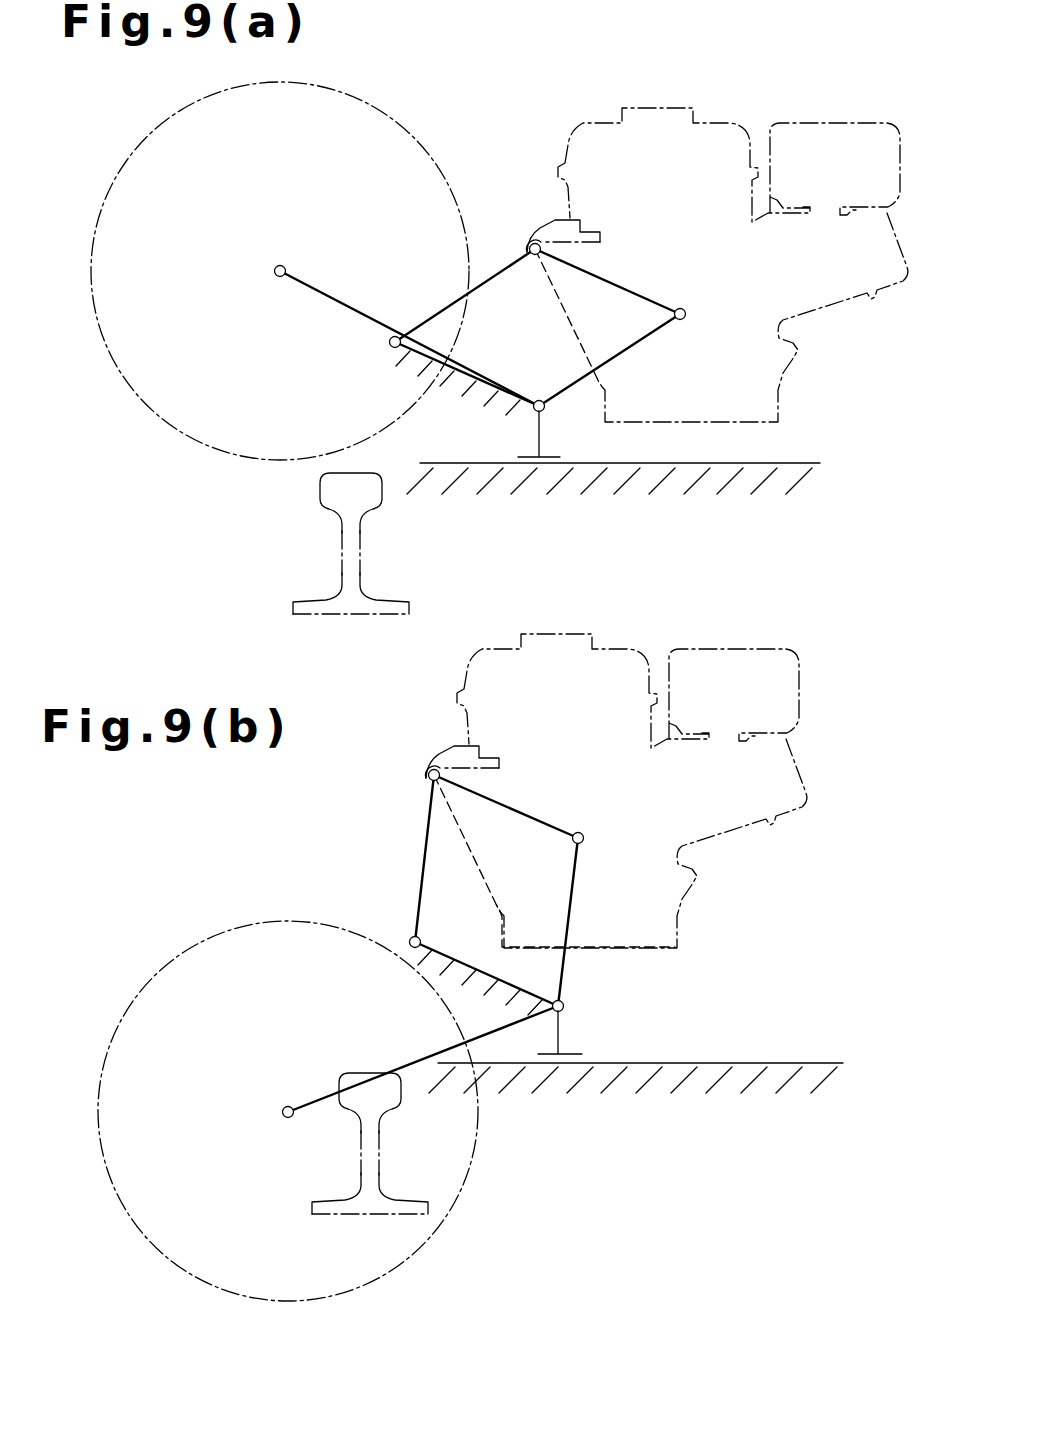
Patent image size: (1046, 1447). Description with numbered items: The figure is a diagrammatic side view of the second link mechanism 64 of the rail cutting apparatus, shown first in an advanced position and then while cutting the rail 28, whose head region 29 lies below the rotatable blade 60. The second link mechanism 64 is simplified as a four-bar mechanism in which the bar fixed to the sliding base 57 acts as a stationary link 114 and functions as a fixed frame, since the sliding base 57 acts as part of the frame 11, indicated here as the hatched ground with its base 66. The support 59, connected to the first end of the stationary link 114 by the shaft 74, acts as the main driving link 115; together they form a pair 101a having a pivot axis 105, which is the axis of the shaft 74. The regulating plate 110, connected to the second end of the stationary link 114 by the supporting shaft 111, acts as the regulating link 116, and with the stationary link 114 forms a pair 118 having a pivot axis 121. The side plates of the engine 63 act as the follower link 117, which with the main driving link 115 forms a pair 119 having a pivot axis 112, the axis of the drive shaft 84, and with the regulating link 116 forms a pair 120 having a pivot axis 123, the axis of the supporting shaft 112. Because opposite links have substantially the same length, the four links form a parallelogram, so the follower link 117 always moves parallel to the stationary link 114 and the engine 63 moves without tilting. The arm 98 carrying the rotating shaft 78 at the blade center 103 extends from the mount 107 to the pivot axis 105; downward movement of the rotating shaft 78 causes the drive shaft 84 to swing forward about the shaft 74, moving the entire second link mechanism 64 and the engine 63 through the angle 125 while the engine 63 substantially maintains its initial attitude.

In FIG. 9A, the frame 11 is at (540, 478).
In FIG. 9B, the frame 11 is at (562, 1082).
In FIG. 9A, the rail 28 is at (330, 614).
In FIG. 9B, the rail 28 is at (338, 1216).
In FIG. 9A, the rail head 29 is at (358, 472).
In FIG. 9B, the rail head 29 is at (352, 1073).
In FIG. 9A, the sliding base 57 is at (540, 433).
In FIG. 9B, the sliding base 57 is at (560, 1034).
In FIG. 9A, the support 59 is at (311, 290).
In FIG. 9B, the support 59 is at (409, 1068).
In FIG. 9A, the rotatable blade 60 is at (396, 115).
In FIG. 9B, the rotatable blade 60 is at (192, 944).
In FIG. 9A, the engine 63 is at (733, 122).
In FIG. 9B, the engine 63 is at (633, 648).
In FIG. 9A, the second link mechanism 64 is at (468, 253).
In FIG. 9B, the second link mechanism 64 is at (358, 856).
In FIG. 9A, the support base 66 is at (568, 461).
In FIG. 9B, the support base 66 is at (599, 1062).
In FIG. 9A, the shaft 74 is at (535, 400).
In FIG. 9B, the shaft 74 is at (566, 1005).
In FIG. 9A, the rotating shaft 78 is at (274, 271).
In FIG. 9B, the rotating shaft 78 is at (283, 1115).
In FIG. 9A, the drive shaft 84 is at (690, 311).
In FIG. 9B, the drive shaft 84 is at (581, 832).
In FIG. 9A, the wheel support link 98 is at (392, 338).
In FIG. 9B, the wheel support link 98 is at (423, 1095).
In FIG. 9A, the pair 101a is at (549, 406).
In FIG. 9B, the pair 101a is at (553, 1012).
In FIG. 9A, the axle pin 103 is at (280, 262).
In FIG. 9B, the axle pin 103 is at (284, 1103).
In FIG. 9A, the pivot axis 105 is at (525, 373).
In FIG. 9B, the pivot axis 105 is at (631, 990).
In FIG. 9A, the axle arm 107 is at (231, 298).
In FIG. 9B, the axle arm 107 is at (247, 1148).
In FIG. 9A, the regulating plate 110 is at (459, 296).
In FIG. 9B, the regulating plate 110 is at (421, 857).
In FIG. 9A, the supporting shaft 111 is at (387, 333).
In FIG. 9B, the supporting shaft 111 is at (423, 938).
In FIG. 9A, the supporting shaft 112 is at (748, 298).
In FIG. 9B, the supporting shaft 112 is at (631, 811).
In FIG. 9A, the stationary link 114 is at (450, 380).
In FIG. 9B, the stationary link 114 is at (470, 984).
In FIG. 9A, the main driving link 115 is at (624, 351).
In FIG. 9B, the main driving link 115 is at (576, 888).
In FIG. 9A, the regulating link 116 is at (468, 253).
In FIG. 9B, the regulating link 116 is at (358, 856).
In FIG. 9A, the follower link 117 is at (607, 279).
In FIG. 9B, the follower link 117 is at (514, 805).
In FIG. 9A, the pair 118 is at (391, 351).
In FIG. 9B, the pair 118 is at (411, 934).
In FIG. 9A, the pair 119 is at (690, 320).
In FIG. 9B, the pair 119 is at (586, 846).
In FIG. 9A, the pair 120 is at (545, 260).
In FIG. 9B, the pair 120 is at (446, 786).
In FIG. 9A, the pivot axis 121 is at (390, 284).
In FIG. 9B, the pivot axis 121 is at (458, 924).
In FIG. 9A, the pivot axis 123 is at (572, 226).
In FIG. 9B, the pivot axis 123 is at (472, 752).
In FIG. 9B, the angle 125 is at (370, 892).